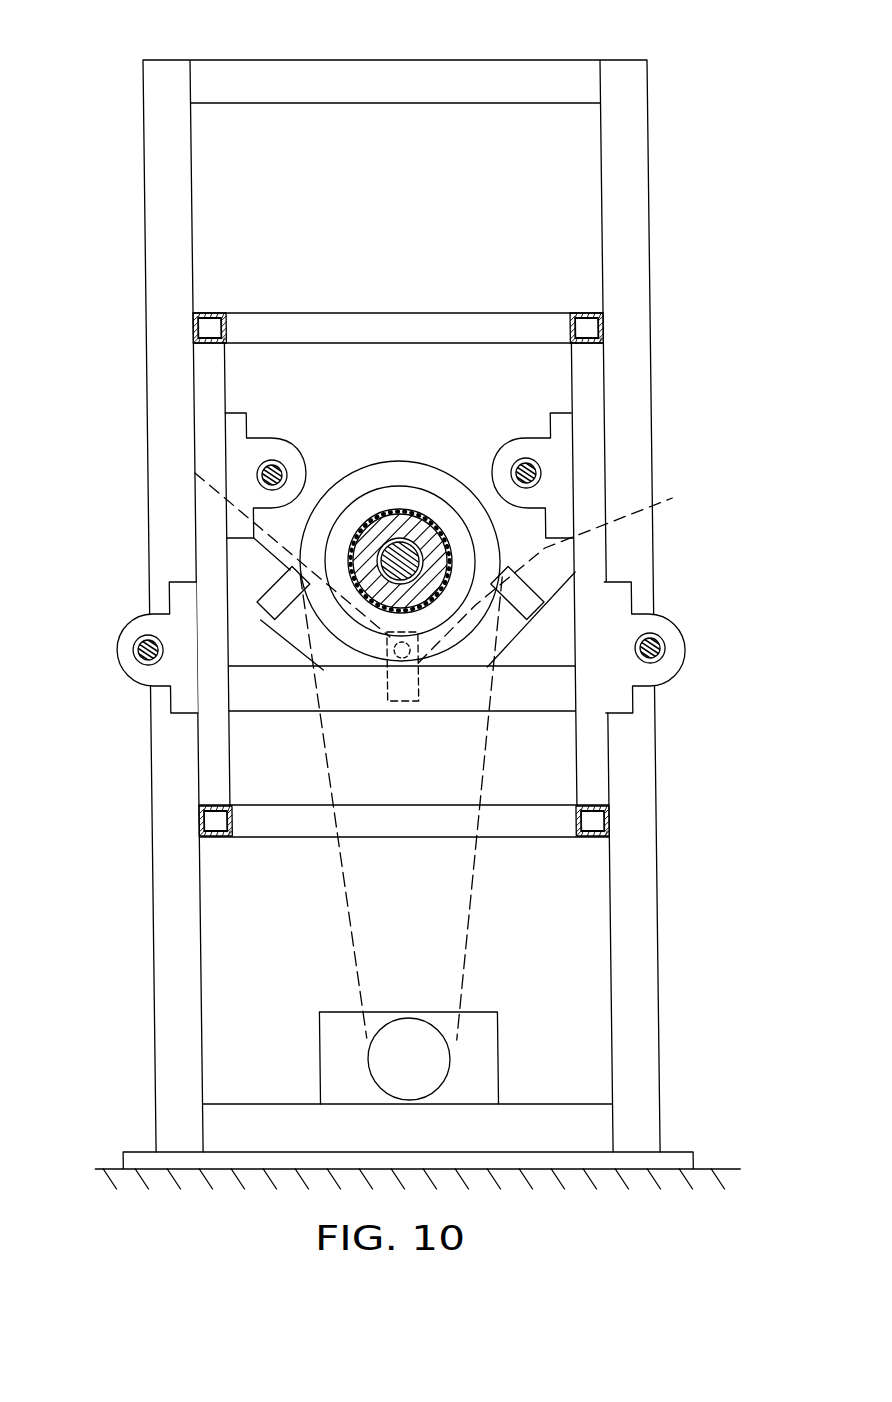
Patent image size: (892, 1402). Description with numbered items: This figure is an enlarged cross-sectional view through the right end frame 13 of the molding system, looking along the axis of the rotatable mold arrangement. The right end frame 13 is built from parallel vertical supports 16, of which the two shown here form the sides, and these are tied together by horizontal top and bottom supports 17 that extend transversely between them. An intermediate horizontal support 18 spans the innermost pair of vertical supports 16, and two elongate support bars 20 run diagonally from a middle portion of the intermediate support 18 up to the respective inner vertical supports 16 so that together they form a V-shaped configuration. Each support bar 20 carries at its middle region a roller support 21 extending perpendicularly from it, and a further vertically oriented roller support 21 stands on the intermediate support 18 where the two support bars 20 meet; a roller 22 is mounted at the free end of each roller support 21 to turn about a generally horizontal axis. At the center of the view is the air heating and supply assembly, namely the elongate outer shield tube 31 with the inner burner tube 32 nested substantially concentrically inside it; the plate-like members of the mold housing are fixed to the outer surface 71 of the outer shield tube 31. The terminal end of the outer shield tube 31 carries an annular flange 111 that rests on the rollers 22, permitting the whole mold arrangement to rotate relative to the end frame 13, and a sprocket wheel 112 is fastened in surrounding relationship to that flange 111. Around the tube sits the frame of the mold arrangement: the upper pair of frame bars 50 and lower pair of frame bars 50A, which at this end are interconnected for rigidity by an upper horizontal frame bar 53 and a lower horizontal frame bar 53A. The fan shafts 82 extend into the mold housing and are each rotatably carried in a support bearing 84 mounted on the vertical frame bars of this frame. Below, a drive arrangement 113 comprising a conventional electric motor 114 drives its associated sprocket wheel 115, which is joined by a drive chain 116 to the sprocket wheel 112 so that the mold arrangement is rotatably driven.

The right end frame 13 is at (184, 36).
The vertical supports 16 is at (158, 800).
The horizontal top and bottom supports 17 is at (480, 75).
The intermediate horizontal support 18 is at (538, 705).
The support bars 20 is at (232, 550).
The roller supports 21 is at (257, 590).
The rollers 22 is at (428, 755).
The outer shield tube 31 is at (384, 540).
The inner burner tube 32 is at (372, 545).
The upper frame bars 50 is at (195, 328).
The lower frame bars 50A is at (198, 821).
The upper horizontal frame bar 53 is at (453, 325).
The lower horizontal frame bar 53A is at (283, 828).
The outer surface of outer shield tube 71 is at (409, 478).
The shafts 82 is at (260, 468).
The support bearings 84 is at (240, 423).
The annular flange 111 is at (360, 617).
The sprocket wheel 112 is at (397, 504).
The drive arrangement 113 is at (490, 985).
The electric motor 114 is at (337, 1035).
The sprocket wheel 115 is at (385, 1062).
The drive chain 116 is at (470, 868).